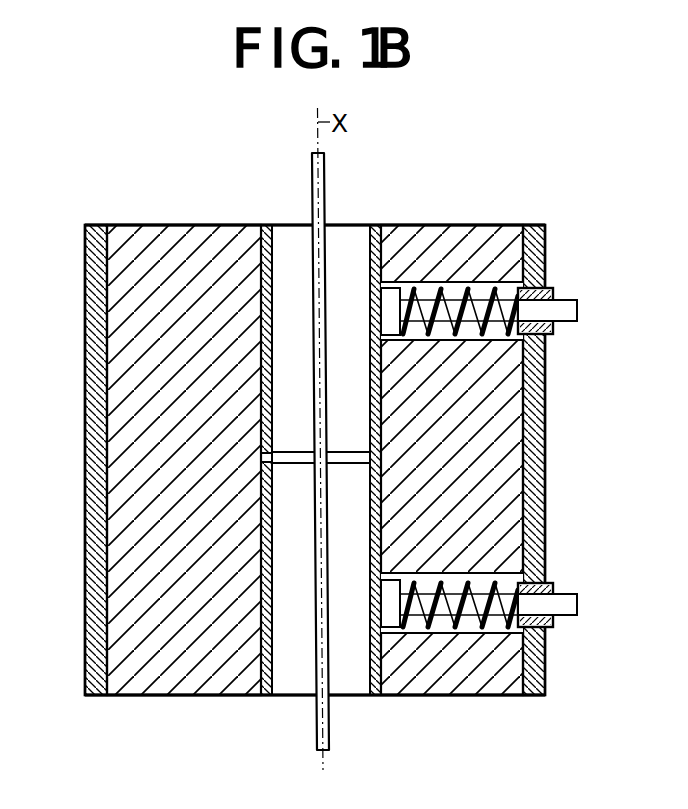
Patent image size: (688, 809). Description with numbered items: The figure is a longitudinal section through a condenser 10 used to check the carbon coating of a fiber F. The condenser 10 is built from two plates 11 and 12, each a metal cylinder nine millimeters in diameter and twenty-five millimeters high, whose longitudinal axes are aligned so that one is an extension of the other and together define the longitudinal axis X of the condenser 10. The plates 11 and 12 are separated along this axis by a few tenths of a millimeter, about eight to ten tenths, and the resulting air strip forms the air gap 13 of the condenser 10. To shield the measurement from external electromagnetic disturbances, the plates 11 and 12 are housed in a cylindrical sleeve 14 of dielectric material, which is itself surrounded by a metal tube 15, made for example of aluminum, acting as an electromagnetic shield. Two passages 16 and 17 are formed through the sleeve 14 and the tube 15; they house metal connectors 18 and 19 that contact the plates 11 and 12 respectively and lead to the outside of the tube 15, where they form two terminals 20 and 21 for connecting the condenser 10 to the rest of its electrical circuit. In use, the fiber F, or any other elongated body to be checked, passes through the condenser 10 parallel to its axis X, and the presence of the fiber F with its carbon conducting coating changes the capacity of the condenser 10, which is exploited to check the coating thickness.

The condenser 10 is at (122, 195).
The plate 11 is at (265, 283).
The plate 12 is at (270, 666).
The air gap 13 is at (288, 455).
The cylindrical sleeve 14 is at (180, 296).
The metal tube 15 is at (85, 257).
The passage 16 is at (428, 290).
The passage 17 is at (441, 626).
The metal connector 18 is at (485, 305).
The metal connector 19 is at (495, 605).
The terminal 20 is at (578, 312).
The terminal 21 is at (573, 602).
The fiber F is at (326, 195).